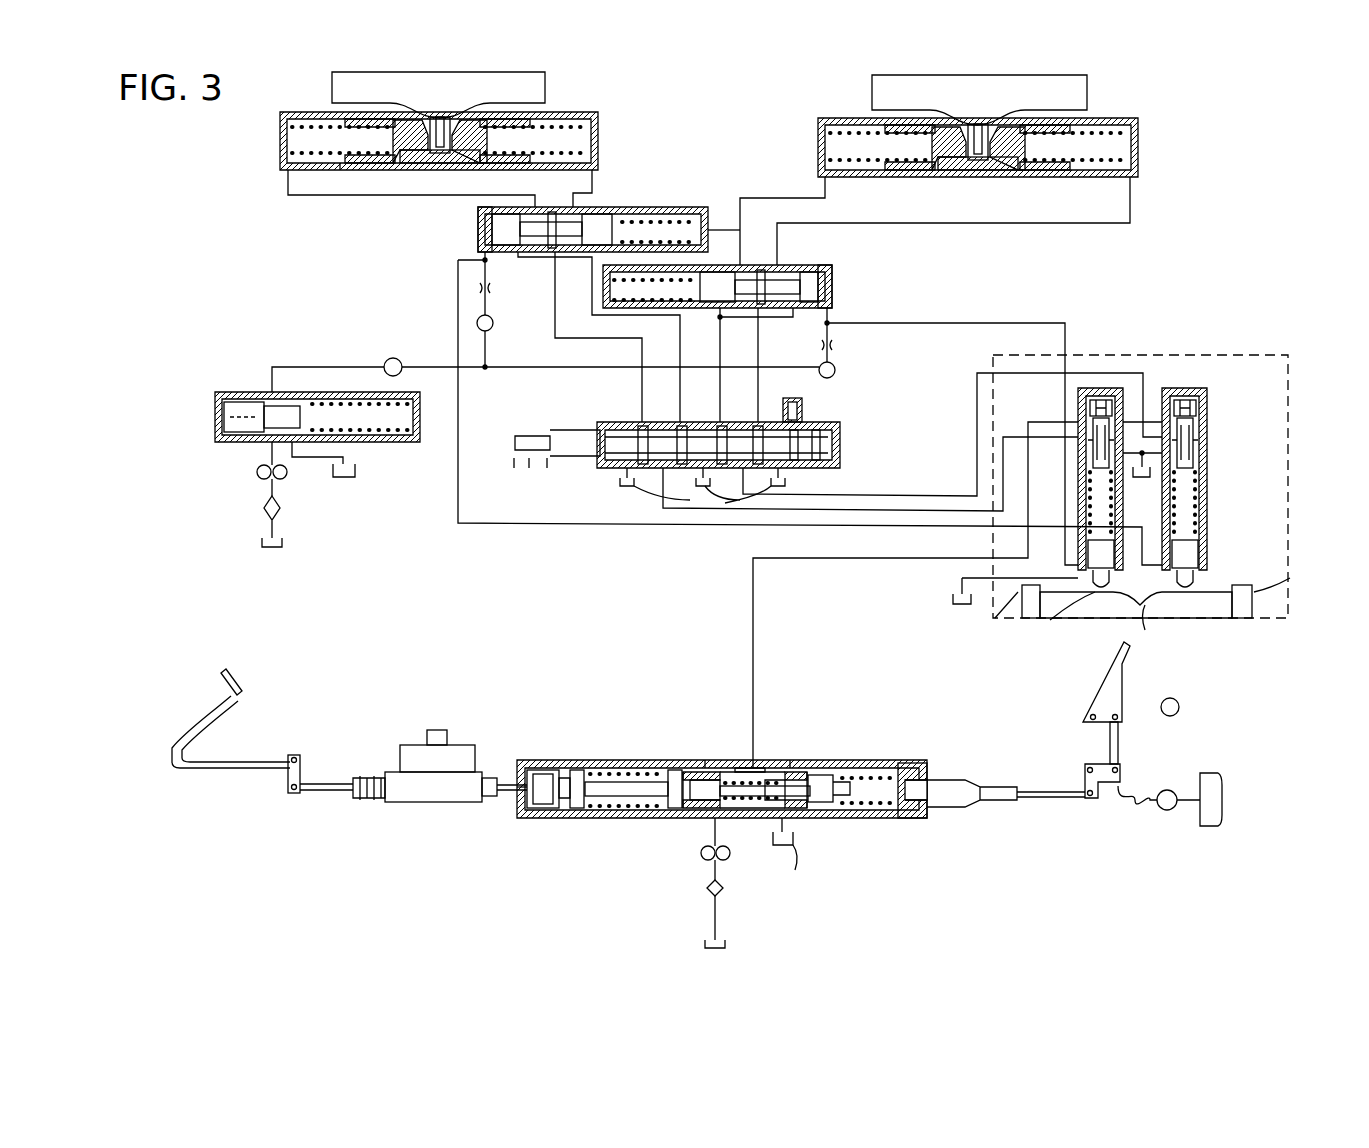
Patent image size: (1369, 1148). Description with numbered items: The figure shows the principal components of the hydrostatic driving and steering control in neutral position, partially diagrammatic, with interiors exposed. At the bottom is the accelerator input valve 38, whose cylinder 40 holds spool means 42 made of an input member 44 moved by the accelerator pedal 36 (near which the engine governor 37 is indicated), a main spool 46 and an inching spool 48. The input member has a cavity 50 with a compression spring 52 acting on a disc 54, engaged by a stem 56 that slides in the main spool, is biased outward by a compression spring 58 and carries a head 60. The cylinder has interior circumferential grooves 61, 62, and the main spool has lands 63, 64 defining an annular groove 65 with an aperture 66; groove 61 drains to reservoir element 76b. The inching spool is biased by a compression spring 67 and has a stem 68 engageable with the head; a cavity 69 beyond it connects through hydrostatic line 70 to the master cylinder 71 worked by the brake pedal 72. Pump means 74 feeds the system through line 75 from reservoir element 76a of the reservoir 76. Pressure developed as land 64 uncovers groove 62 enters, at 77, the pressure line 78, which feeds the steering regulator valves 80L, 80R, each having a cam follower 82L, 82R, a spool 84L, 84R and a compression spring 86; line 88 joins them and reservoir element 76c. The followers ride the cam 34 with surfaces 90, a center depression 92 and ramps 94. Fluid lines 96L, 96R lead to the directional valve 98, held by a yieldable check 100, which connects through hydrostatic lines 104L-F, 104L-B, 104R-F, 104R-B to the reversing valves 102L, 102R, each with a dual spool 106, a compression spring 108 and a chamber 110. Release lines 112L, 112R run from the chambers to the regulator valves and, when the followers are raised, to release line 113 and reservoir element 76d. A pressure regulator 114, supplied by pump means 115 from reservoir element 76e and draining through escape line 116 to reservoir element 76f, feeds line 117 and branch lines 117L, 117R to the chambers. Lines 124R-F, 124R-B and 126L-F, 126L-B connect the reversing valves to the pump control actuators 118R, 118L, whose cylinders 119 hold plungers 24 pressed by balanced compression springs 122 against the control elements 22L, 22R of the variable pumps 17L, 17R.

The variable pump 17L is at (548, 90).
The variable pump 17R is at (868, 90).
The control element 22L is at (440, 130).
The control element 22R is at (977, 132).
The plunger 24 is at (480, 165).
The cam 34 is at (1215, 612).
The accelerator pedal 36 is at (1122, 683).
The engine governor 37 is at (1180, 707).
The accelerator input valve 38 is at (672, 765).
The cylinder 40 is at (885, 765).
The spool means 42 is at (735, 770).
The input member 44 is at (962, 775).
The main spool 46 is at (680, 812).
The inching spool 48 is at (540, 780).
The cavity 50 is at (905, 770).
The compression spring 52 is at (905, 818).
The disc 54 is at (856, 770).
The stem 56 is at (830, 795).
The compression spring 58 is at (769, 850).
The head 60 is at (650, 808).
The interior circumferential groove 61 is at (790, 772).
The interior circumferential groove 62 is at (706, 775).
The land 63 is at (790, 800).
The land 64 is at (690, 770).
The exterior annular groove 65 is at (762, 790).
The aperture 66 is at (740, 785).
The compression spring 67 is at (575, 812).
The stem 68 is at (592, 795).
The cavity 69 is at (512, 810).
The hydrostatic line 70 is at (500, 785).
The master cylinder 71 is at (400, 790).
The brake pedal 72 is at (230, 760).
The pump means 74 is at (700, 858).
The line 75 is at (718, 833).
The reservoir 76 is at (702, 498).
The reservoir element 76a is at (700, 944).
The reservoir element 76b is at (811, 869).
The reservoir element 76c is at (1142, 481).
The reservoir element 76d is at (948, 604).
The reservoir element 76e is at (290, 548).
The reservoir element 76f is at (365, 477).
The communication point 77 is at (760, 762).
The pressure line 78 is at (1147, 420).
The steering regulator valve 80L is at (1084, 508).
The steering regulator valve 80R is at (1207, 486).
The cam follower 82L is at (1088, 576).
The cam follower 82R is at (1190, 562).
The spool 84L is at (1096, 462).
The spool 84R is at (1208, 460).
The compression spring 86 is at (1206, 522).
The line 88 is at (1198, 420).
The cam surface 90 is at (1070, 619).
The center depression 92 is at (1160, 625).
The ramp 94 is at (1300, 572).
The fluid line 96L is at (1000, 467).
The fluid line 96R is at (975, 393).
The directional valve 98 is at (596, 420).
The yieldable check 100 is at (806, 410).
The reversing valve 102L is at (655, 208).
The reversing valve 102R is at (792, 262).
The hydrostatic line 104L-B is at (620, 366).
The hydrostatic line 104L-F is at (668, 342).
The hydrostatic line 104R-B is at (740, 398).
The hydrostatic line 104R-F is at (782, 340).
The dual spool 106 is at (590, 214).
The compression spring 108 is at (739, 232).
The chamber 110 is at (476, 222).
The hydrostatic release line 112L is at (455, 308).
The hydrostatic release line 112R is at (1040, 327).
The release line 113 is at (975, 578).
The pressure regulator 114 is at (213, 412).
The pump means 115 is at (256, 478).
The escape line 116 is at (300, 458).
The line 117 is at (272, 360).
The branch line 117L is at (486, 352).
The branch line 117R is at (836, 320).
The pump control actuator 118L is at (600, 122).
The pump control actuator 118R is at (818, 128).
The cylinder 119 is at (340, 170).
The balanced compression spring 122 is at (556, 163).
The hydrostatic fluid line 124R-B is at (742, 190).
The hydrostatic fluid line 124R-F is at (1062, 225).
The hydrostatic fluid line 126L-B is at (305, 198).
The hydrostatic fluid line 126L-F is at (595, 180).